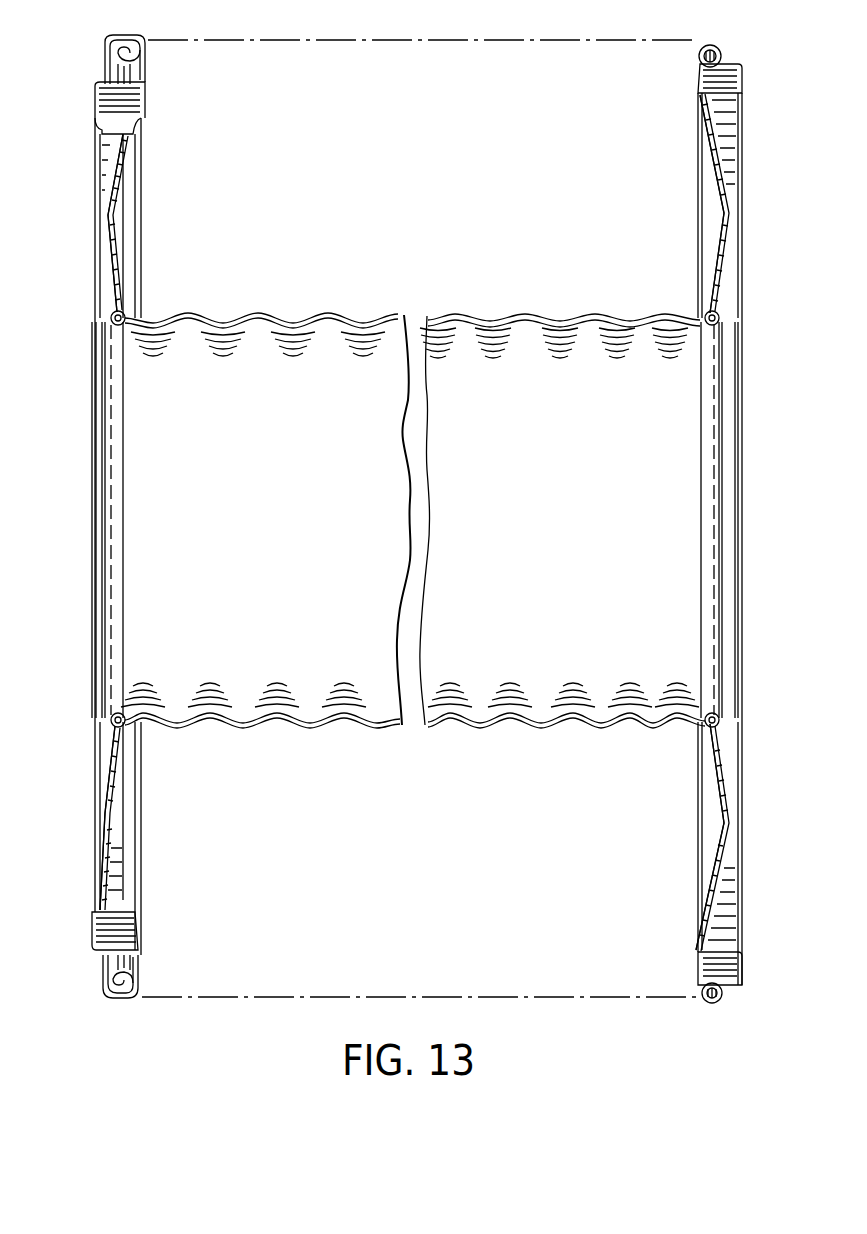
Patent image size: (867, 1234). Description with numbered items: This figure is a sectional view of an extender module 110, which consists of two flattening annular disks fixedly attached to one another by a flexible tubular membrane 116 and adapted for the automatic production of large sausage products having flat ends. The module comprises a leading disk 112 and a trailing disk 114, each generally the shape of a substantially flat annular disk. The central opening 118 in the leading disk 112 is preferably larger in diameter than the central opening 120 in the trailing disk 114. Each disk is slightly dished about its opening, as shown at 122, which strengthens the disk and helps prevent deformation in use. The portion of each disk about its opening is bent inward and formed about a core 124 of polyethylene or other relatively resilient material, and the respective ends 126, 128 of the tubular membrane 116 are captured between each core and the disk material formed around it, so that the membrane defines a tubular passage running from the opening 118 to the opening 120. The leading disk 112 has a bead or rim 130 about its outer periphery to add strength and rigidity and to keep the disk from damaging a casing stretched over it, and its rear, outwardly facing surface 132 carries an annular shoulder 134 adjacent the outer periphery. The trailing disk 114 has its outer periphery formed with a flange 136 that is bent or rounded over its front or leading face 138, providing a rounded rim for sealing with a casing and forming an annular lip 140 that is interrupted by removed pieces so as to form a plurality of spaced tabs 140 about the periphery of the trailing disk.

The extender module 110 is at (382, 40).
The leading disk 112 is at (745, 160).
The trailing disk 114 is at (150, 145).
The flexible tubular membrane 116 is at (413, 528).
The central opening 118 is at (708, 484).
The central opening 120 is at (112, 508).
The dished portion 122 is at (120, 226).
The core 124 is at (110, 320).
The end of tubular membrane 126 is at (618, 726).
The end of tubular membrane 128 is at (204, 318).
The bead or rim 130 is at (711, 45).
The rear or outwardly facing surface 132 is at (722, 245).
The annular shoulder 134 is at (743, 78).
The flange 136 is at (137, 38).
The front or leading face 138 is at (108, 196).
The annular lip / tabs 140 is at (114, 66).